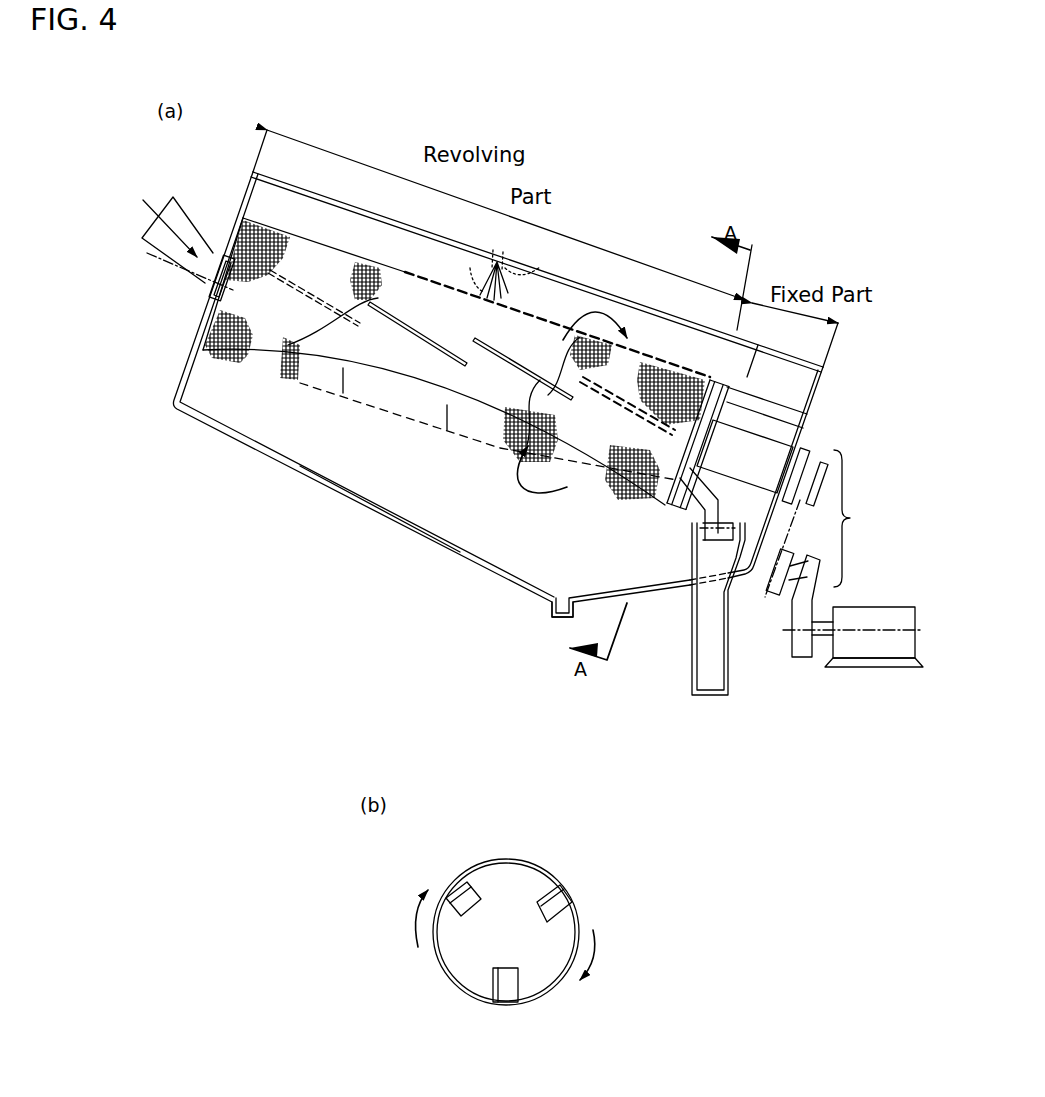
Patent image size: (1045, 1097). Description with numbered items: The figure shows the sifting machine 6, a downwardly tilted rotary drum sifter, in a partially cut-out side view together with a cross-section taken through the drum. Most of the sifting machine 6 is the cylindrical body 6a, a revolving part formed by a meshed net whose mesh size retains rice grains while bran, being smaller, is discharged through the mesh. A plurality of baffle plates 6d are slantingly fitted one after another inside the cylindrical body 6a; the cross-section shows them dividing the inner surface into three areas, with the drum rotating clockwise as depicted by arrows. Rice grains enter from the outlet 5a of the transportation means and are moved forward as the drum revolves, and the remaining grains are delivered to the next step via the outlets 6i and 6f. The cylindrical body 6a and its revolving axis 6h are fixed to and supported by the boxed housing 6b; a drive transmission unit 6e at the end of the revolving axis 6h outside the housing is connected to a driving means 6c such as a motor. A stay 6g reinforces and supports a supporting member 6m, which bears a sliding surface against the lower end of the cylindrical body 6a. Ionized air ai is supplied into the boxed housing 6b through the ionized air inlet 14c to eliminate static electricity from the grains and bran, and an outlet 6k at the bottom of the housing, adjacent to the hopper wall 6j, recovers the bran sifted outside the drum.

The outlet of the transportation means 5a is at (193, 222).
The sifting machine 6 is at (598, 288).
The cylindrical body 6a is at (413, 274).
The boxed housing 6b is at (290, 213).
The driving means 6c is at (883, 607).
The baffle plates 6d is at (415, 330).
The drive transmission unit 6e is at (821, 553).
The outlet 6f is at (690, 666).
The stay 6g is at (755, 405).
The revolving axis 6h is at (737, 443).
The outlet 6i is at (714, 503).
The hopper wall 6j is at (452, 548).
The outlet 6k is at (550, 608).
The supporting member 6m is at (729, 378).
The air flow ai is at (505, 261).
The ionized air inlet 14c is at (538, 280).